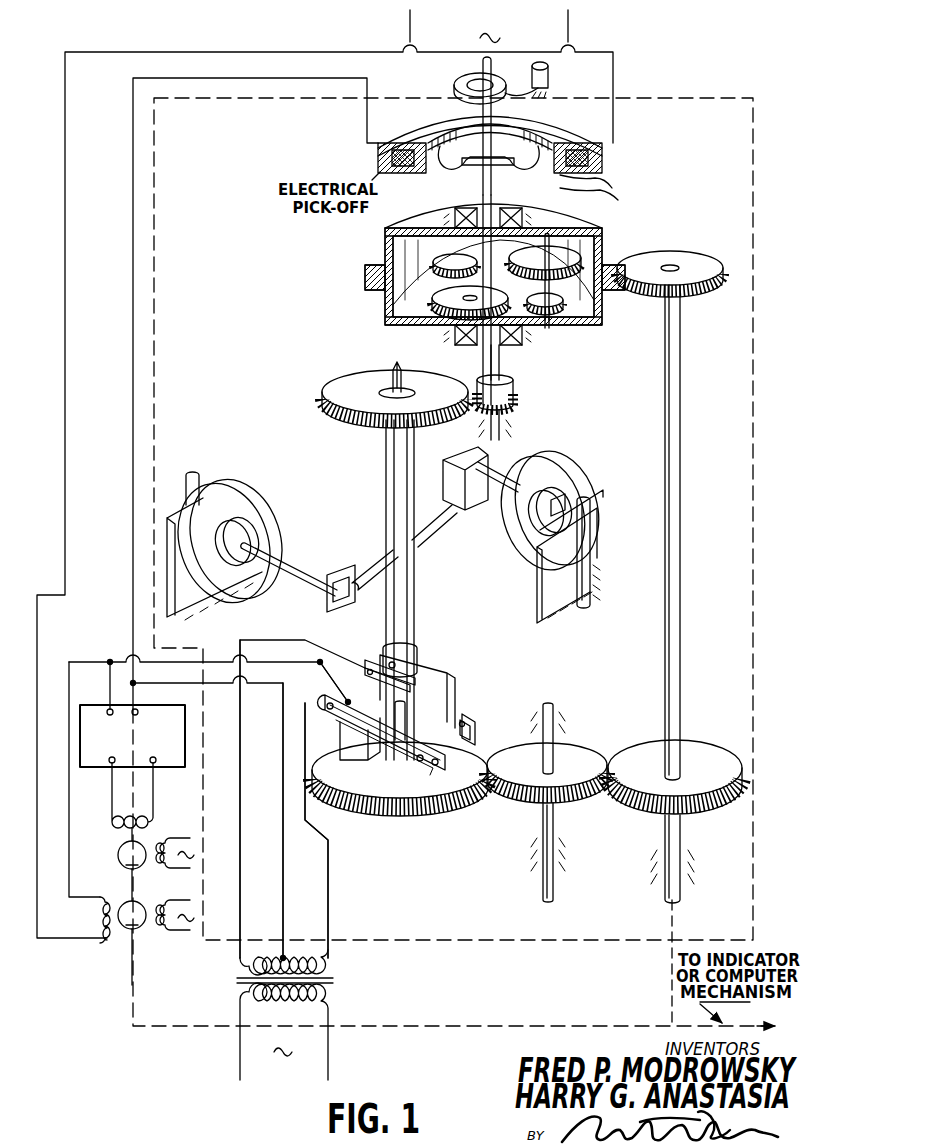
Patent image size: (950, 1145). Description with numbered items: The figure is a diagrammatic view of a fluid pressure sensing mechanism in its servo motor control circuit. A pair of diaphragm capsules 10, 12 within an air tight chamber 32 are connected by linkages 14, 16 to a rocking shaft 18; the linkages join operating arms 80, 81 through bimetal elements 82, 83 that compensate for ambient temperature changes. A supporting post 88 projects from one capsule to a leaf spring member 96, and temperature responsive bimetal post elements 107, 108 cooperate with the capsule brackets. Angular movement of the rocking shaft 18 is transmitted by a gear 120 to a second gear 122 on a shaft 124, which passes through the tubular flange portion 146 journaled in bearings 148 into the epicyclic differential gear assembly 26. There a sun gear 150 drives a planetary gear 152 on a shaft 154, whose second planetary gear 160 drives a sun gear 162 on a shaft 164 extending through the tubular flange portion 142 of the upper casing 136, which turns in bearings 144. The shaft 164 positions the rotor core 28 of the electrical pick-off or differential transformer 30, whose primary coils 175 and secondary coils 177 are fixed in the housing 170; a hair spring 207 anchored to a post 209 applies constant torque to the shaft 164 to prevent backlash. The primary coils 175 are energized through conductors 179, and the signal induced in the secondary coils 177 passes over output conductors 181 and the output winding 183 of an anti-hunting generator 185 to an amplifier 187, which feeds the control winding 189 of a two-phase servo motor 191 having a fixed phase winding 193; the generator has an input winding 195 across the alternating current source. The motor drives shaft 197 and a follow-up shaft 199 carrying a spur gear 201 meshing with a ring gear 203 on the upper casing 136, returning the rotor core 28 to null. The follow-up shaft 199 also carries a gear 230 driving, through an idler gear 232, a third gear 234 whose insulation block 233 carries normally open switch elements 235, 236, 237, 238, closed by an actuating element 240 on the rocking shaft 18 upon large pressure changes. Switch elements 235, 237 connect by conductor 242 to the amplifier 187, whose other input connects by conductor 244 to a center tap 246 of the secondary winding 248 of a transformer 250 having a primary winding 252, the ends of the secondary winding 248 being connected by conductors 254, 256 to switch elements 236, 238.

The diaphragm capsule 10 is at (578, 470).
The diaphragm capsule 12 is at (248, 492).
The linkage 14 is at (502, 478).
The linkage 16 is at (300, 576).
The rocking shaft 18 is at (416, 585).
The differential gear assembly 26 is at (350, 253).
The rotor core element 28 is at (468, 166).
The differential transformer 30 is at (372, 154).
The air tight chamber 32 is at (640, 105).
The operating arm 80 is at (435, 520).
The operating arm 81 is at (372, 560).
The bimetal element 82 is at (466, 462).
The bimetal element 83 is at (333, 575).
The supporting post 88 is at (565, 496).
The leaf spring member 96 is at (548, 583).
The bimetal post element 107 is at (592, 551).
The bimetal post element 108 is at (188, 484).
The gear 120 is at (345, 390).
The second gear 122 is at (515, 390).
The shaft 124 is at (503, 366).
The upper casing 136 is at (600, 248).
The tubular flange portion 142 is at (455, 220).
The bearings 144 is at (525, 222).
The tubular flange portion 146 is at (525, 338).
The bearings 148 is at (453, 338).
The sun gear 150 is at (470, 290).
The planetary gear 152 is at (579, 334).
The shaft 154 is at (560, 288).
The second planetary gear 160 is at (588, 236).
The sun gear 162 is at (485, 258).
The shaft 164 is at (495, 207).
The differential transformer housing 170 is at (608, 162).
The primary coils 175 is at (608, 199).
The secondary coils 177 is at (604, 186).
The conductors 179 is at (568, 35).
The output conductors 181 is at (252, 70).
The output winding 183 is at (98, 922).
The anti-hunting generator 185 is at (142, 940).
The amplifier 187 is at (102, 758).
The control winding 189 is at (130, 820).
The two-phase servo motor 191 is at (160, 828).
The fixed phase winding 193 is at (165, 850).
The input winding 195 is at (166, 912).
The shaft 197 is at (505, 1024).
The follow-up shaft 199 is at (682, 710).
The spur gear 201 is at (692, 282).
The ring gear 203 is at (362, 279).
The hair spring 207 is at (472, 80).
The post 209 is at (548, 80).
The gear 230 is at (650, 804).
The idler gear 232 is at (530, 797).
The insulation block 233 is at (360, 762).
The third gear 234 is at (395, 812).
The switch element 235 is at (345, 700).
The switch element 236 is at (340, 712).
The switch element 237 is at (365, 666).
The switch element 238 is at (372, 660).
The actuating element 240 is at (452, 676).
The conductor 242 is at (213, 662).
The conductor 244 is at (283, 830).
The center tap 246 is at (283, 956).
The secondary winding 248 is at (330, 968).
The transformer 250 is at (345, 980).
The primary winding 252 is at (330, 1000).
The conductor 254 is at (328, 898).
The conductor 256 is at (240, 814).